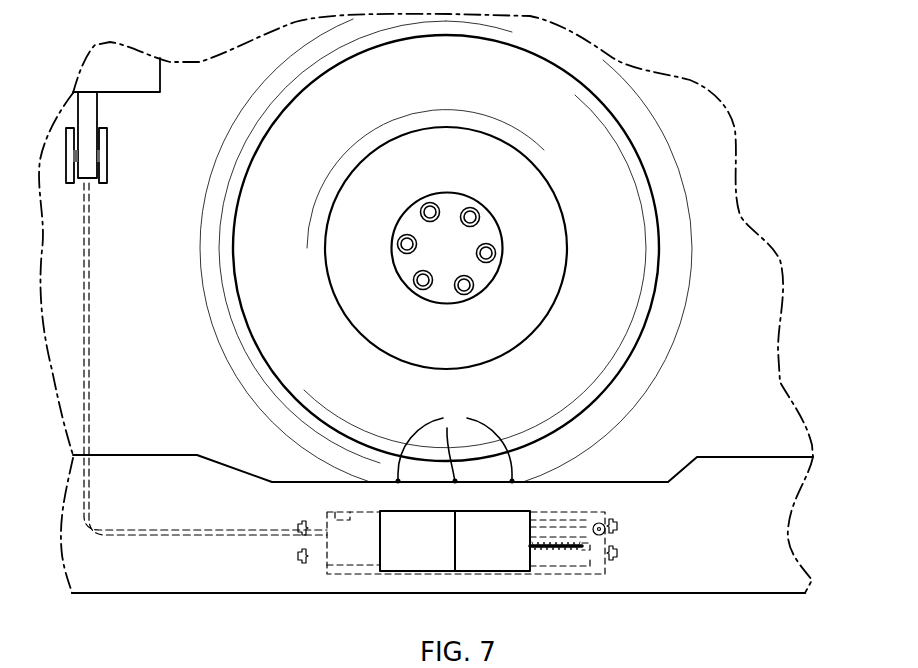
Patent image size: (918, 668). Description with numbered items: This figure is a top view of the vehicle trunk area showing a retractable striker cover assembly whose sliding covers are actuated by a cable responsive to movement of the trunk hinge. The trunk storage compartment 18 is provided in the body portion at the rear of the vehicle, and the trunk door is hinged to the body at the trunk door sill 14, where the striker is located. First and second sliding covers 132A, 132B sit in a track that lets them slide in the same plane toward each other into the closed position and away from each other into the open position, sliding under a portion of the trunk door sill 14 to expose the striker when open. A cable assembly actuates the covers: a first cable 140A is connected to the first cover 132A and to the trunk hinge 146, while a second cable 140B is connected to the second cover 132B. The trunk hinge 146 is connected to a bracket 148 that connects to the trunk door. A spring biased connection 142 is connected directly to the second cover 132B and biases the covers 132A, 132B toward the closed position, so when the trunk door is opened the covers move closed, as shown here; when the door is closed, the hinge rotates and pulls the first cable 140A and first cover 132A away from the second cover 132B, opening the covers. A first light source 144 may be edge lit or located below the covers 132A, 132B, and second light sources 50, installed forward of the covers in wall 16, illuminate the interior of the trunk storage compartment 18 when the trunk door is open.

The trunk door sill 14 is at (108, 568).
The wall 16 is at (748, 456).
The trunk storage compartment 18 is at (683, 122).
The second light sources 50 is at (455, 446).
The first sliding cover 132A is at (408, 571).
The second sliding cover 132B is at (495, 571).
The first cable 140A is at (93, 343).
The second cable 140B is at (590, 593).
The spring biased connection 142 is at (545, 550).
The first light source 144 is at (298, 527).
The trunk hinge 146 is at (83, 165).
The bracket 148 is at (100, 112).